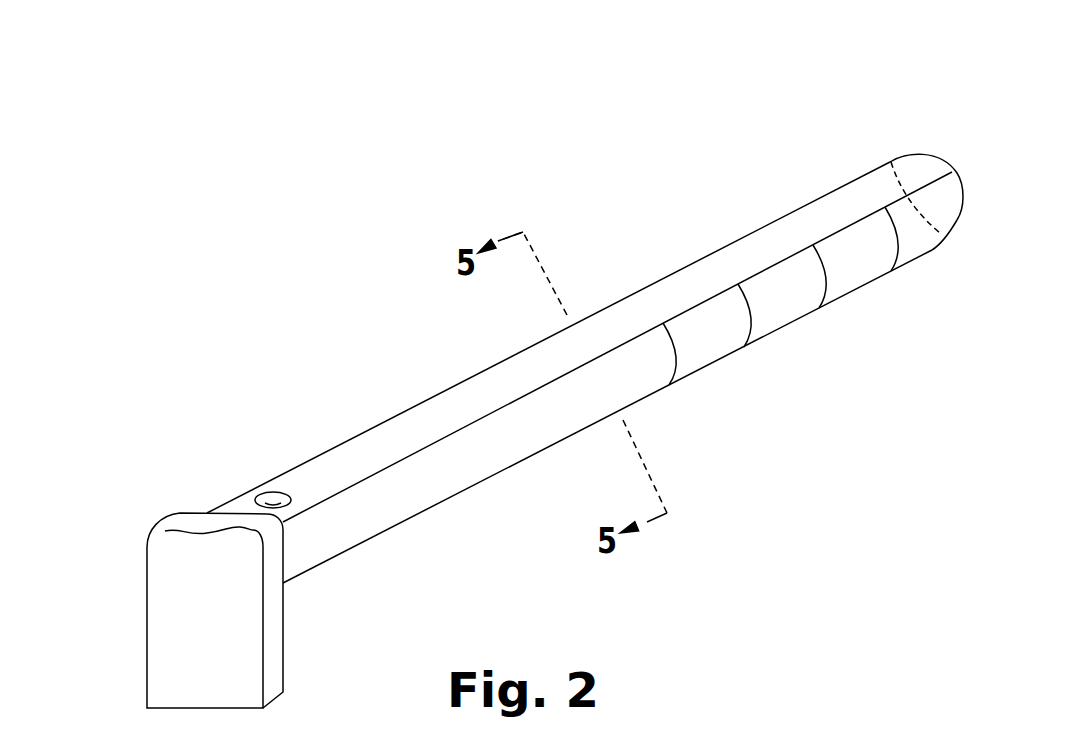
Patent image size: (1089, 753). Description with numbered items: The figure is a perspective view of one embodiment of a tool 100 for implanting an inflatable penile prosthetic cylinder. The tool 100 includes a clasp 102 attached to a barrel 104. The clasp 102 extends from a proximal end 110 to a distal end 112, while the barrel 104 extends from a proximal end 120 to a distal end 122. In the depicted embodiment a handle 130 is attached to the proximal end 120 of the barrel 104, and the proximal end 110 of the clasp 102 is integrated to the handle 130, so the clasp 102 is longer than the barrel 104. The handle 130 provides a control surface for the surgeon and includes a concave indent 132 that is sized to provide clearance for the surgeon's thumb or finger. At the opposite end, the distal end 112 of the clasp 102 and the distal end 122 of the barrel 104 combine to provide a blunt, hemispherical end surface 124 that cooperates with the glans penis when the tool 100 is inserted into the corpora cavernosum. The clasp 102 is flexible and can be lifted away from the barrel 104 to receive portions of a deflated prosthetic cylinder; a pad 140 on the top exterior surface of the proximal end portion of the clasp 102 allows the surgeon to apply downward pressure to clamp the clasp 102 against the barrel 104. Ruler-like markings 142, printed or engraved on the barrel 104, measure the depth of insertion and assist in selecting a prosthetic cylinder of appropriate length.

The tool 100 is at (513, 120).
The clasp 102 is at (413, 425).
The barrel 104 is at (502, 450).
The proximal end of the clasp 110 is at (203, 513).
The distal end of the clasp 112 is at (940, 168).
The proximal end of the barrel 120 is at (284, 585).
The distal end of the barrel 122 is at (963, 198).
The blunt end surface 124 is at (943, 213).
The handle 130 is at (183, 579).
The concave indent 132 is at (213, 522).
The pad 140 is at (267, 487).
The markings 142 is at (745, 320).